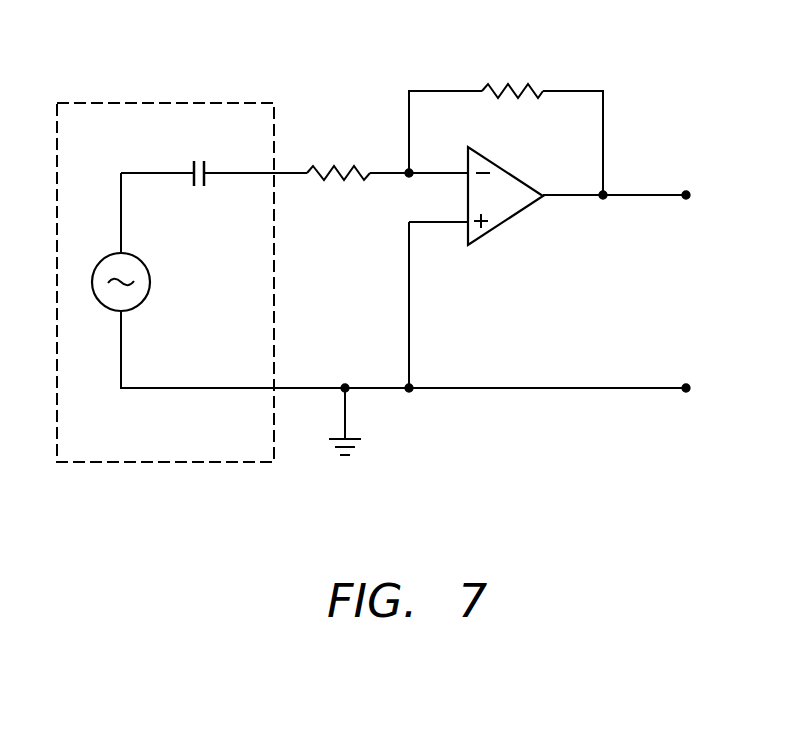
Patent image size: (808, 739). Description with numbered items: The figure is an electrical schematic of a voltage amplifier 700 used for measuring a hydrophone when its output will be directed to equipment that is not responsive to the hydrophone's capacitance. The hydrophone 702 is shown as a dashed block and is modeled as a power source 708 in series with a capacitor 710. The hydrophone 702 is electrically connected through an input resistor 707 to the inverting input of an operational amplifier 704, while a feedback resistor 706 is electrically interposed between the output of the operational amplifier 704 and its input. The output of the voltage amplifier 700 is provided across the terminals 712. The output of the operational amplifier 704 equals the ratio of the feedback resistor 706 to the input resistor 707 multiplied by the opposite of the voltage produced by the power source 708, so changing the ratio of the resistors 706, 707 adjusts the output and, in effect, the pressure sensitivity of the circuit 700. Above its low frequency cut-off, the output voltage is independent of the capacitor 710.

The voltage amplifier 700 is at (671, 125).
The hydrophone 702 is at (185, 463).
The operational amplifier 704 is at (513, 217).
The feedback resistor 706 is at (516, 88).
The input resistor 707 is at (342, 166).
The power source 708 is at (148, 302).
The capacitor 710 is at (190, 166).
The terminals 712 is at (686, 195).